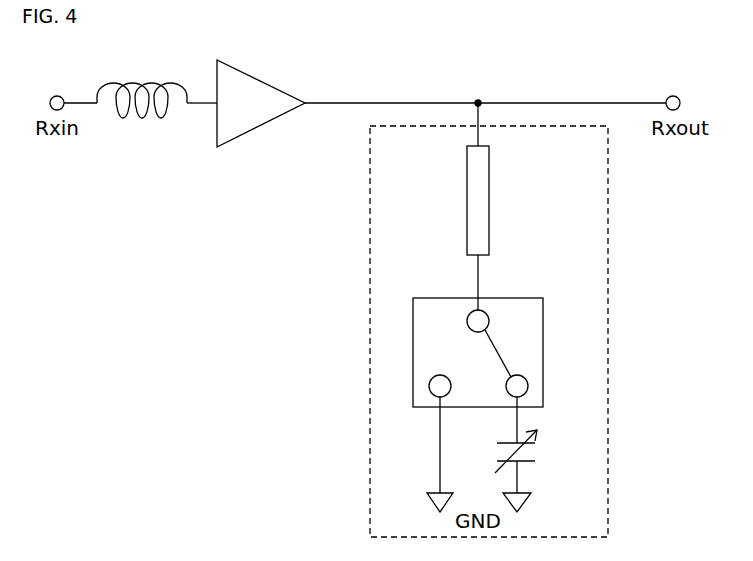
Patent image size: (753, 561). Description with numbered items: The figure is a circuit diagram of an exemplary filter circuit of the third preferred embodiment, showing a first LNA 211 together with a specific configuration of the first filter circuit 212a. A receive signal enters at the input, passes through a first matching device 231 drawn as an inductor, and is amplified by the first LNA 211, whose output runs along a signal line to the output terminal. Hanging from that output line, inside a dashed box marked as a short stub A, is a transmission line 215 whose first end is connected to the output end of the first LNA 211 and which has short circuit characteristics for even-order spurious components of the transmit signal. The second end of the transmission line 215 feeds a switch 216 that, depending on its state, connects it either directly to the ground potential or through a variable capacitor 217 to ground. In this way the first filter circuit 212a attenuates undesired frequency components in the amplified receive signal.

The first matching device 231 is at (136, 83).
The first LNA 211 is at (257, 78).
The first filter circuit 212a is at (582, 61).
The transmission line 215 is at (489, 188).
The switch 216 is at (523, 298).
The variable capacitor 217 is at (532, 453).
The short stub A is at (608, 256).